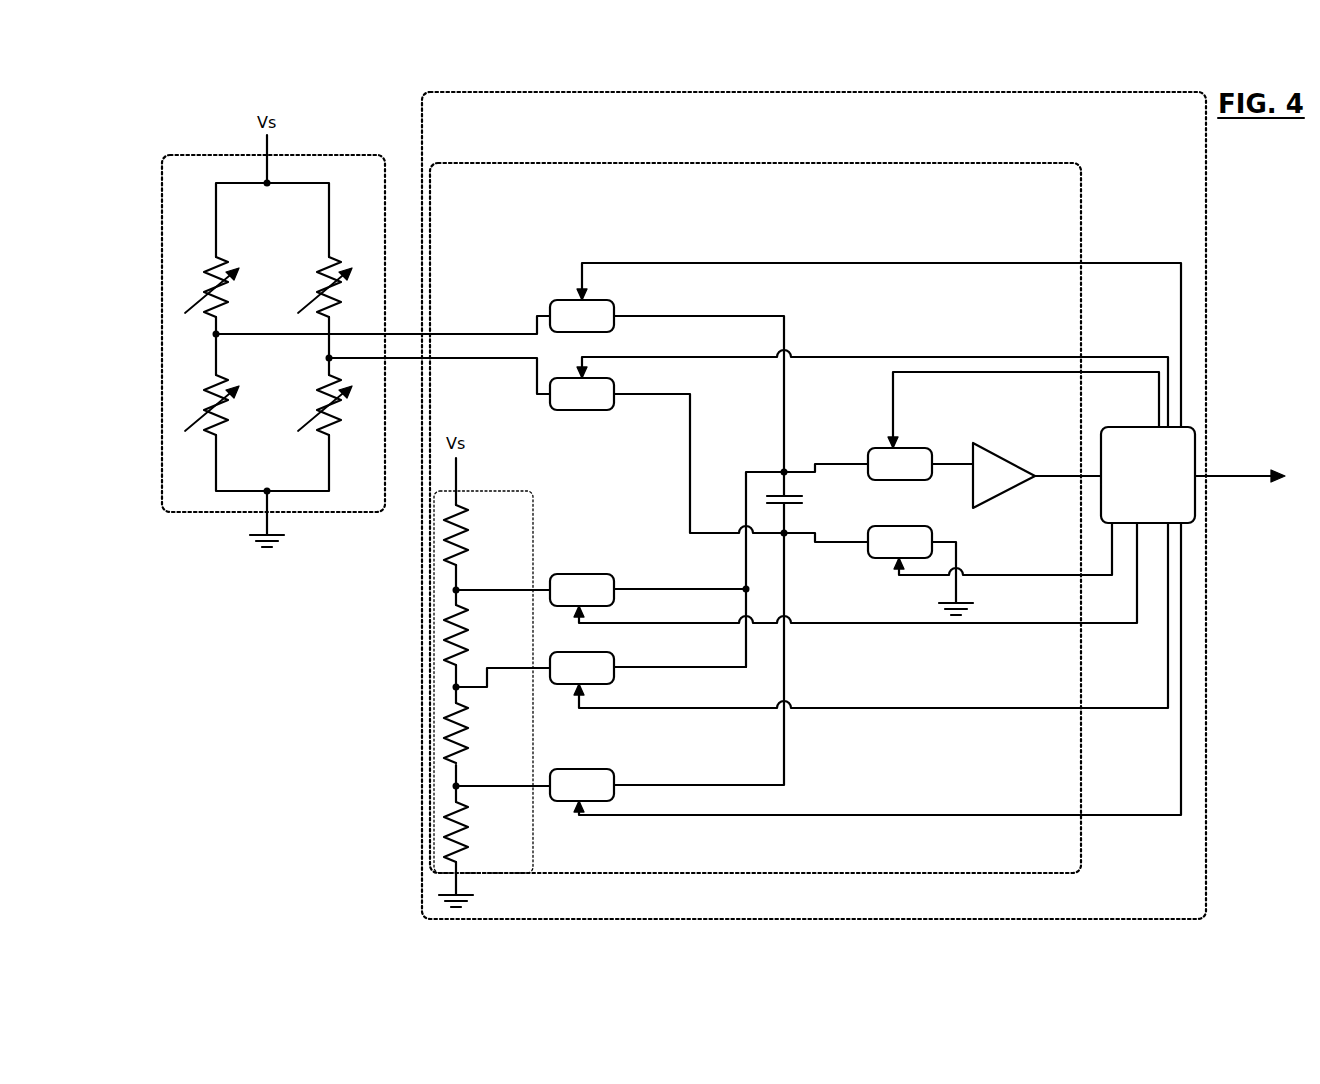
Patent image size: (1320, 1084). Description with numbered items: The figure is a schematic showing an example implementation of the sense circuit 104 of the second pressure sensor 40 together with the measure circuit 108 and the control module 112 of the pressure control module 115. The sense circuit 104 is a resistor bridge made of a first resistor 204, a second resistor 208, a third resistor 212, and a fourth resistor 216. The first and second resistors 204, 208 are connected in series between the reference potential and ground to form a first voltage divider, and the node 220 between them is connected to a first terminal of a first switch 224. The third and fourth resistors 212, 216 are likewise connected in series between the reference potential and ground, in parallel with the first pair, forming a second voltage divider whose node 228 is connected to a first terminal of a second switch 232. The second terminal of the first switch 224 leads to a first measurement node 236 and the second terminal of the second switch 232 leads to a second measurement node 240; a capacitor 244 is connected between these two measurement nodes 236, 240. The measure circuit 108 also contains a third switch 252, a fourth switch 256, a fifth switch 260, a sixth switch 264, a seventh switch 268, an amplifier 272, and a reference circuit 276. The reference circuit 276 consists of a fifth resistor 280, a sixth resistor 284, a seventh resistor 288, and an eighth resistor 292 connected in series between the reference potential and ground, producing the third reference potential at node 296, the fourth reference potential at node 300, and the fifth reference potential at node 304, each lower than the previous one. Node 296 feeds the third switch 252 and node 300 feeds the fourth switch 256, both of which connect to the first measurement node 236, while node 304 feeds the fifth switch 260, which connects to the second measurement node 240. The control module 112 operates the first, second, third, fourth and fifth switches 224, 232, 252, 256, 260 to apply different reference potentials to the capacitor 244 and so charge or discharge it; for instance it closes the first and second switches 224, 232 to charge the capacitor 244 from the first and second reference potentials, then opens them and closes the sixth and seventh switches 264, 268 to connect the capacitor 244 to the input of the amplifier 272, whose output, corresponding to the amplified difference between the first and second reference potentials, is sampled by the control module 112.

The second pressure sensor 40 is at (160, 405).
The sense circuit 104 is at (212, 155).
The measure circuit 108 is at (900, 163).
The control module 112 is at (1148, 427).
The pressure control module 115 is at (1206, 185).
The first resistor 204 is at (222, 257).
The second resistor 208 is at (222, 375).
The third resistor 212 is at (329, 262).
The fourth resistor 216 is at (329, 380).
The node 220 is at (216, 334).
The first switch 224 is at (580, 298).
The node 228 is at (329, 358).
The second switch 232 is at (585, 410).
The first measurement node 236 is at (786, 470).
The second measurement node 240 is at (788, 536).
The capacitor 244 is at (802, 503).
The third switch 252 is at (584, 573).
The fourth switch 256 is at (612, 665).
The fifth switch 260 is at (584, 768).
The sixth switch 264 is at (904, 447).
The seventh switch 268 is at (904, 525).
The amplifier 272 is at (988, 458).
The reference circuit 276 is at (533, 845).
The fifth resistor 280 is at (460, 500).
The sixth resistor 284 is at (470, 630).
The seventh resistor 288 is at (470, 725).
The eighth resistor 292 is at (470, 825).
The node 296 is at (466, 585).
The node 300 is at (448, 687).
The node 304 is at (448, 786).